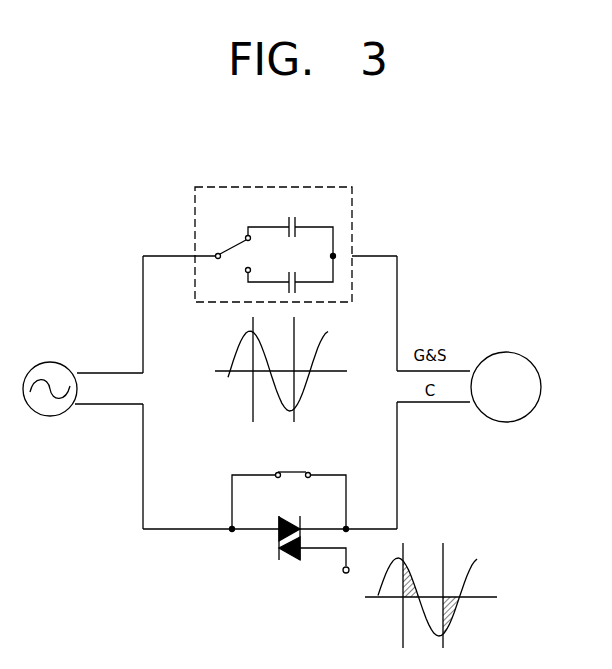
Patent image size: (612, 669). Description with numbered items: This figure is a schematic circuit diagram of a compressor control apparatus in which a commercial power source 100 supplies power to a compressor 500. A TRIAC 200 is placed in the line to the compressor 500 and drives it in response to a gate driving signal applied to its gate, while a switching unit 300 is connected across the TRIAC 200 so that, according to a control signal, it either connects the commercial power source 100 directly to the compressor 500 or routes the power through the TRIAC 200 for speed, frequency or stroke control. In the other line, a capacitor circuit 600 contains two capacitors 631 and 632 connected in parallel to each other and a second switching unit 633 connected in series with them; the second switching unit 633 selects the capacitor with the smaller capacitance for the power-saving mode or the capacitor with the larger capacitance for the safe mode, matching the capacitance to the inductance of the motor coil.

The commercial power source 100 is at (50, 361).
The TRIAC 200 is at (279, 545).
The switching unit 300 is at (285, 470).
The compressor 500 is at (505, 352).
The capacitor circuit 600 is at (265, 187).
The capacitor 631 is at (305, 226).
The capacitor 632 is at (305, 273).
The second switching unit 633 is at (248, 250).